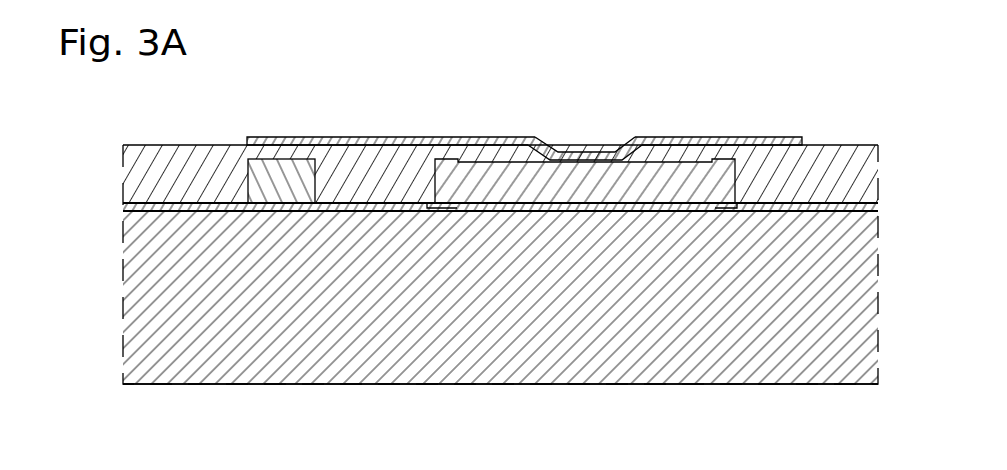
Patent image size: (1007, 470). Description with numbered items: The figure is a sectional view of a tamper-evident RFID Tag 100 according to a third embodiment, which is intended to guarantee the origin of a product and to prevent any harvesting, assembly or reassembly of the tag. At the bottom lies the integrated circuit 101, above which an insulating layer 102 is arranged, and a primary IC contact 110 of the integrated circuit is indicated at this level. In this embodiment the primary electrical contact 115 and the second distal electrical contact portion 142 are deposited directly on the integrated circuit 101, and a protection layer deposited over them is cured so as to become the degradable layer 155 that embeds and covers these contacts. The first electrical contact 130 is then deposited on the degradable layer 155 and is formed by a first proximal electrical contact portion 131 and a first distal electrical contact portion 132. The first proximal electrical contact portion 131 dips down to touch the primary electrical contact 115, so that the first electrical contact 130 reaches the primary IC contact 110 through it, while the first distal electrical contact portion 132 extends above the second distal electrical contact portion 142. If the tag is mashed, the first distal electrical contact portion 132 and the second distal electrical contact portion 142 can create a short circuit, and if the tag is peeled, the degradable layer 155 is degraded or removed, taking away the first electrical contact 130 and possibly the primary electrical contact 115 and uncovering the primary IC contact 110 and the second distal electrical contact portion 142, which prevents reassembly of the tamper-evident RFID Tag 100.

The tamper-evident RFID Tag 100 is at (740, 61).
The integrated circuit 101 is at (745, 292).
The insulating layer 102 is at (130, 205).
The primary IC contact 110 is at (518, 207).
The primary electrical contact 115 is at (683, 180).
The first electrical contact 130 is at (524, 94).
The first proximal electrical contact portion 131 is at (583, 152).
The first distal electrical contact portion 132 is at (300, 137).
The second distal electrical contact portion 142 is at (267, 175).
The degradable layer 155 is at (828, 170).